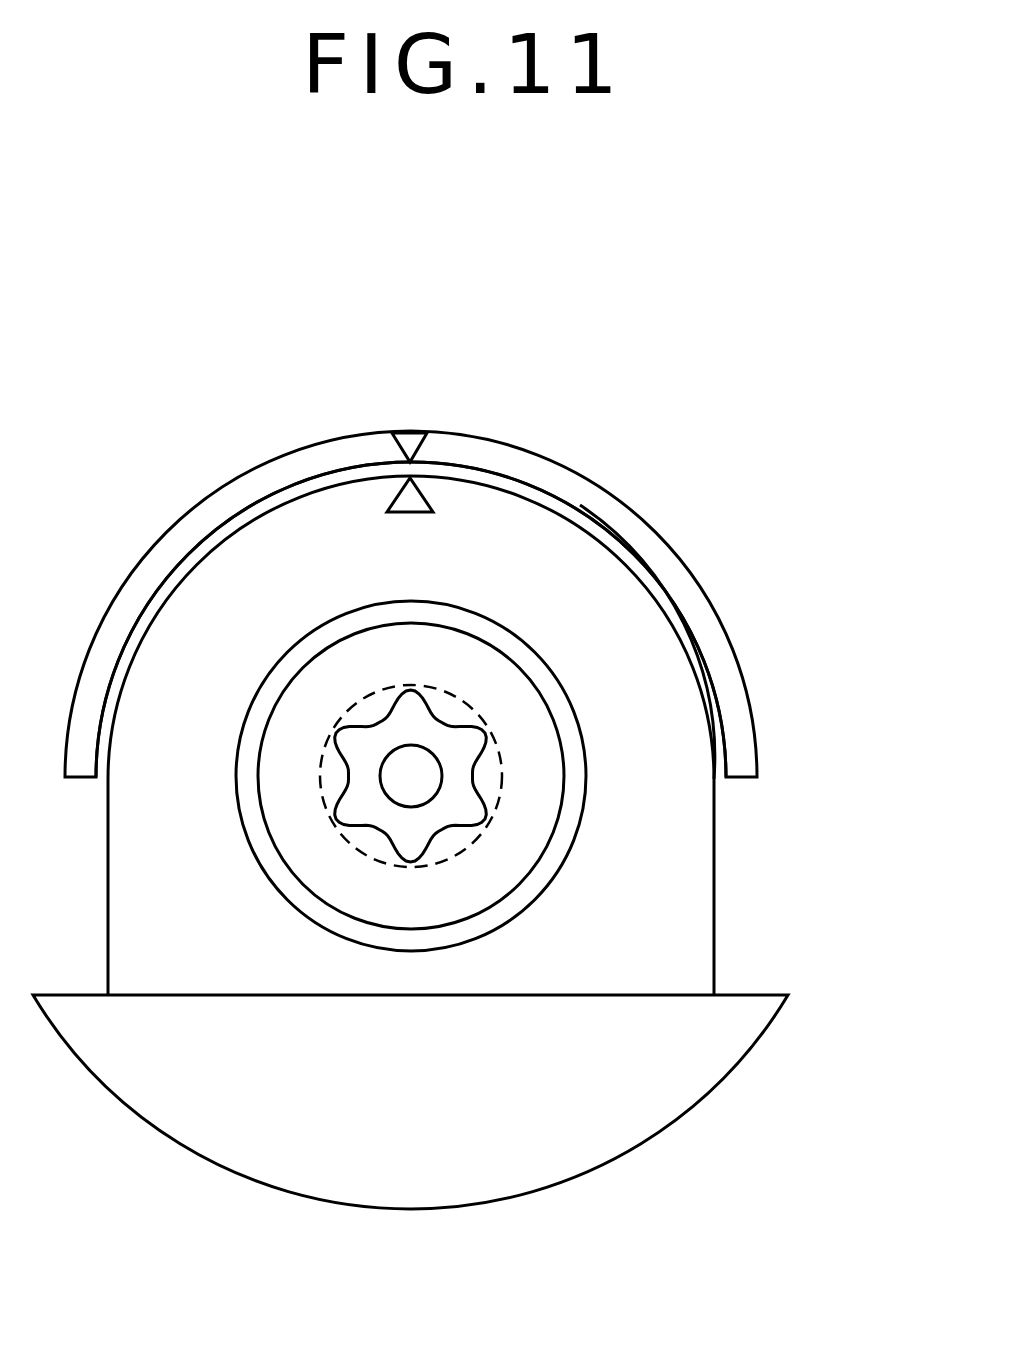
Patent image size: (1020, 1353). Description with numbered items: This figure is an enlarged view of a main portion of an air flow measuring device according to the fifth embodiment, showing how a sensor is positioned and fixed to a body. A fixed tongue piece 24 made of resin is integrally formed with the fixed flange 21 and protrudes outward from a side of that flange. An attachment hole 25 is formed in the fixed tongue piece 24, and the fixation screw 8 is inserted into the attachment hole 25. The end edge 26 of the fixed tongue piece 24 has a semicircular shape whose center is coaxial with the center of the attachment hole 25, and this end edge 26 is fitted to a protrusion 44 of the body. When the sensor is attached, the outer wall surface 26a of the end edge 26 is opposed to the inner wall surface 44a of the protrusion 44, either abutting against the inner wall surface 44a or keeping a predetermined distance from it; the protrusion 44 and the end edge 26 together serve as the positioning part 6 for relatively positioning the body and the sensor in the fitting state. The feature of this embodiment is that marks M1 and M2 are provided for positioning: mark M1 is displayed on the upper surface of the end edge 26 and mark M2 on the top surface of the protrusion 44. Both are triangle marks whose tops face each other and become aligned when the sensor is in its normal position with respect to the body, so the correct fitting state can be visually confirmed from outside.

The positioning part 6 is at (837, 337).
The protrusion 44 is at (579, 493).
The end edge 26 is at (584, 579).
The inner wall surface 44a is at (660, 606).
The outer wall surface 26a is at (710, 703).
The attachment hole 25 is at (567, 781).
The fixed tongue piece 24 is at (648, 898).
The fixed flange 21 is at (80, 1012).
The fixation screw 8 is at (357, 795).
The mark M1 is at (416, 500).
The mark M2 is at (408, 437).